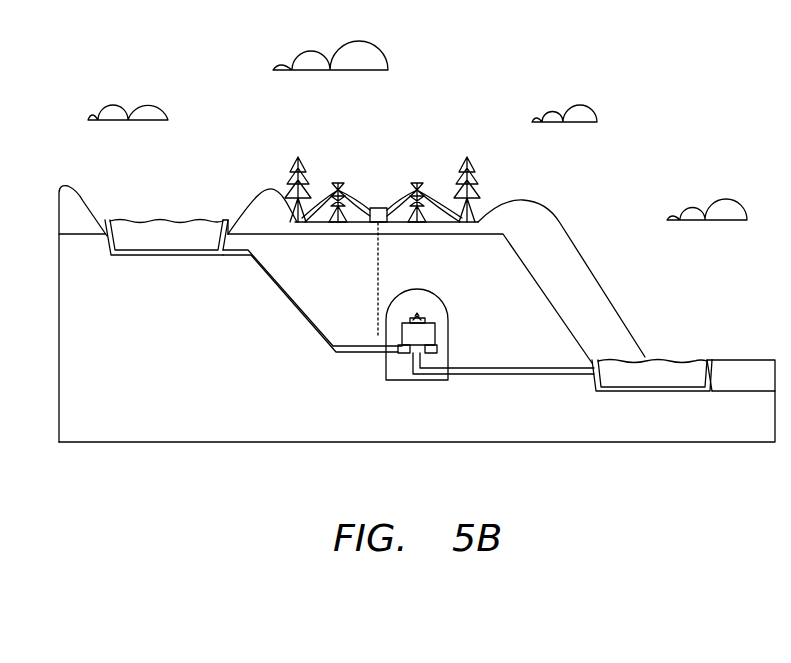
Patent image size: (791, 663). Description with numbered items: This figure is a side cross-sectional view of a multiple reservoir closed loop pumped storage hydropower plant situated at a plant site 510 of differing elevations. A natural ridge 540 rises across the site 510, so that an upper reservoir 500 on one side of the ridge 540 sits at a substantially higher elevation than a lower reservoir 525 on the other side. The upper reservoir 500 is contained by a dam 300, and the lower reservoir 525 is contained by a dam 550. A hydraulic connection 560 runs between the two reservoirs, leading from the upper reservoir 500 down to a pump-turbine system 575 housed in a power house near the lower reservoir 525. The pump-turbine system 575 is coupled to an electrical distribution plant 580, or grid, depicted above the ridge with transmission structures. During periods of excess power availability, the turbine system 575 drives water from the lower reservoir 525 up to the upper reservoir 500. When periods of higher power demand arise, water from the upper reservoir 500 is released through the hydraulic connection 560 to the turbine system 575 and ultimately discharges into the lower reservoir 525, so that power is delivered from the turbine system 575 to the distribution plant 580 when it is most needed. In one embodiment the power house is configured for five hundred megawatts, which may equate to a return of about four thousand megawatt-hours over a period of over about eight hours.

The dam 300 is at (213, 220).
The upper reservoir 500 is at (188, 249).
The plant site 510 is at (444, 80).
The lower reservoir 525 is at (652, 375).
The natural ridge 540 is at (547, 203).
The dam 550 is at (704, 360).
The hydraulic connection 560 is at (285, 302).
The pump-turbine system 575 is at (403, 362).
The electrical distribution plant 580 is at (338, 157).